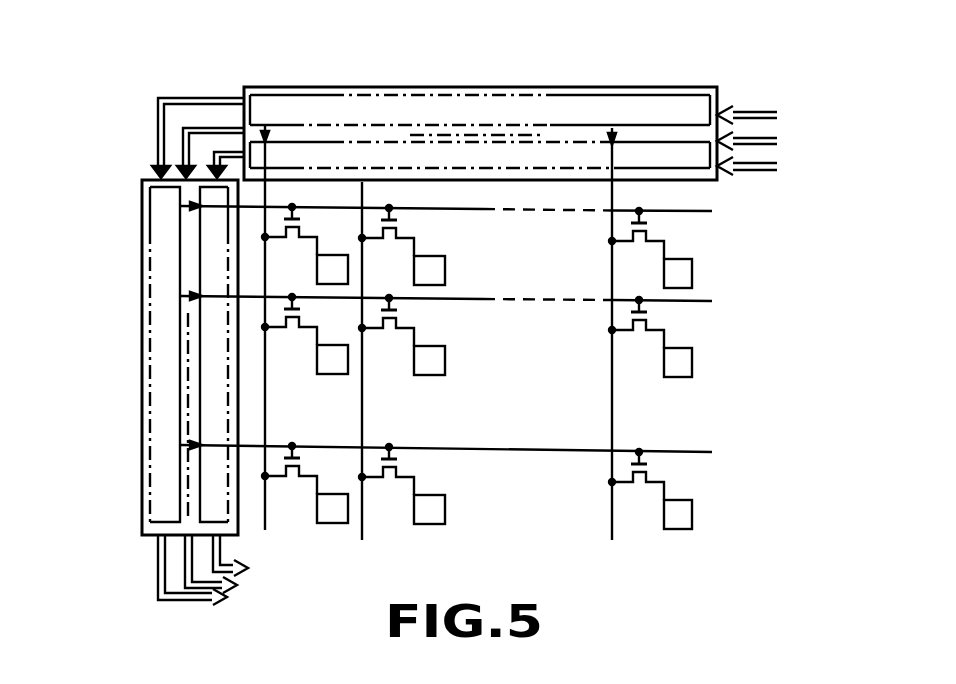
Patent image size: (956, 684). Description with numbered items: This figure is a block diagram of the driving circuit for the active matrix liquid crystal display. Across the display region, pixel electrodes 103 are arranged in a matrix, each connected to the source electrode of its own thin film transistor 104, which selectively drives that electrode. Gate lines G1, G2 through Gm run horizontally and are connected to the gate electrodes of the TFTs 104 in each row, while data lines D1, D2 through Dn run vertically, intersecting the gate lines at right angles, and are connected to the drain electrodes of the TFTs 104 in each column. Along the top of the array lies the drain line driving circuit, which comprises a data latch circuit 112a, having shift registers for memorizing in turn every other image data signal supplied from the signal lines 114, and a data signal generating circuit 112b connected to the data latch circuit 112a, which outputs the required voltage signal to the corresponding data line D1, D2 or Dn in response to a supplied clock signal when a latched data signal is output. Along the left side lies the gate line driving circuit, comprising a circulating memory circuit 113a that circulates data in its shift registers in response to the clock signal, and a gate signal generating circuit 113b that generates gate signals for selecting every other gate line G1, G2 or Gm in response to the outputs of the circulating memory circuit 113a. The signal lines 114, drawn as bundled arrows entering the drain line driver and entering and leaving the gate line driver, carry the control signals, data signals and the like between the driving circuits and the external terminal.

The pixel electrode 103 is at (347, 255).
The thin film transistor 104 is at (301, 229).
The data latch circuit 112a is at (432, 108).
The data signal generating circuit 112b is at (560, 153).
The circulating memory circuit 113a is at (160, 285).
The gate signal generating circuit 113b is at (212, 371).
The signal lines 114 is at (228, 153).
The gate line G1 is at (254, 203).
The gate line G2 is at (446, 281).
The gate line Gm is at (253, 444).
The data line D1 is at (281, 328).
The data line D2 is at (380, 360).
The data line Dn is at (629, 334).